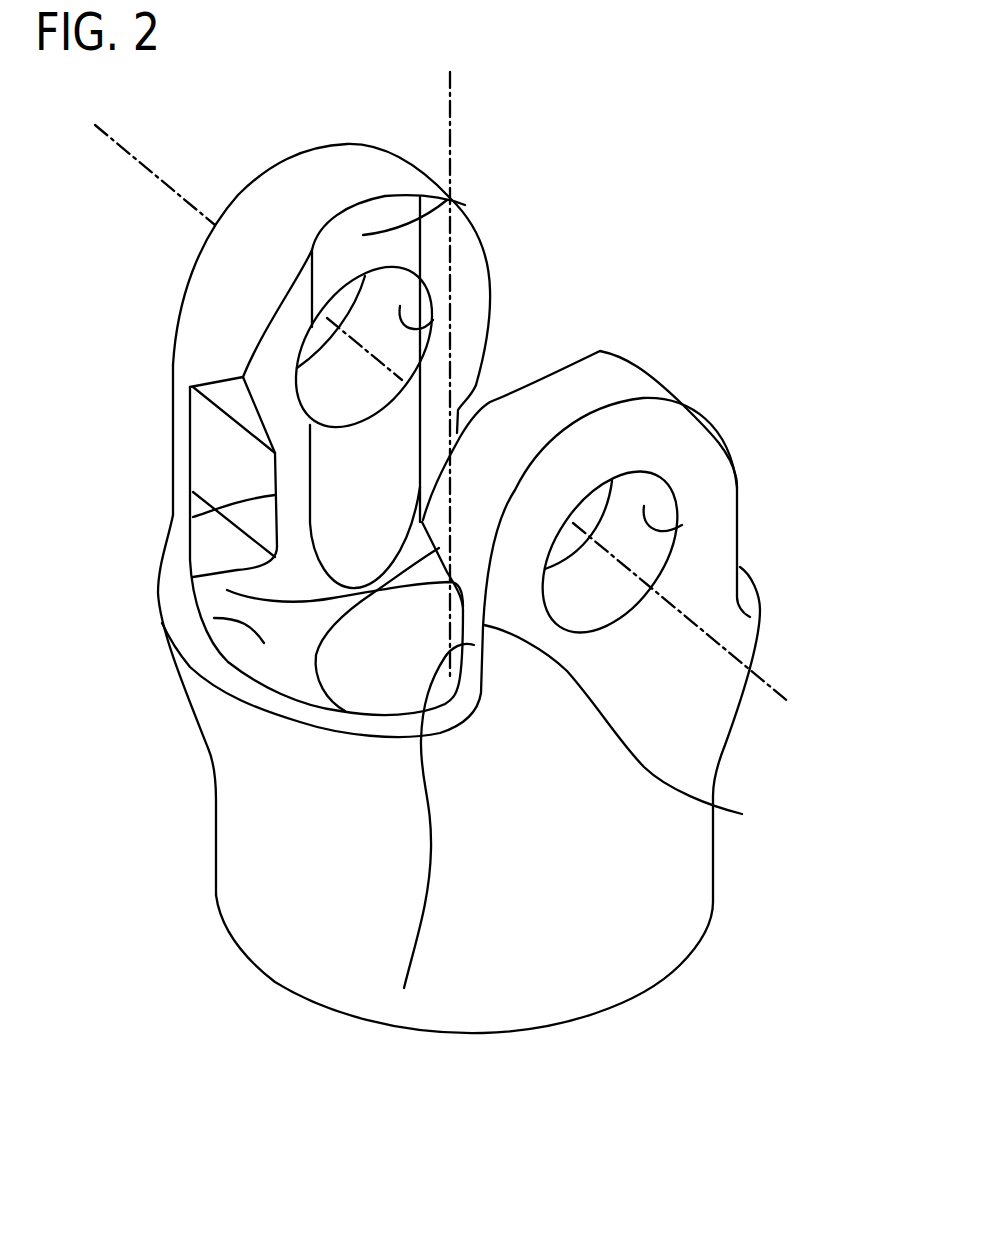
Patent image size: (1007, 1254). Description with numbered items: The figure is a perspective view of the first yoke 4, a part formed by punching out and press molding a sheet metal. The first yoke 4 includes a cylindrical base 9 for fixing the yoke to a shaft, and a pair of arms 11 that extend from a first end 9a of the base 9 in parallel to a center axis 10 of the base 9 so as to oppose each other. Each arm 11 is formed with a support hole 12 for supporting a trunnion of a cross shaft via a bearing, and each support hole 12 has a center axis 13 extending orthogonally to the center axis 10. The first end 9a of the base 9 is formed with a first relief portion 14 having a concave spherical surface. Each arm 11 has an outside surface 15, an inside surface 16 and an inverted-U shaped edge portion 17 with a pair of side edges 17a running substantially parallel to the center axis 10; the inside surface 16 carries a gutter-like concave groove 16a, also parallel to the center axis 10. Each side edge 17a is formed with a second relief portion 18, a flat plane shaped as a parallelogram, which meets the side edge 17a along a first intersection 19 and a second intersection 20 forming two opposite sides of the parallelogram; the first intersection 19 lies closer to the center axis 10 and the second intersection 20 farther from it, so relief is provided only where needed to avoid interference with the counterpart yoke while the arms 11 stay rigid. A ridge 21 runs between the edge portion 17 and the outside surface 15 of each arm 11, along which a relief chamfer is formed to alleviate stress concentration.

The first yoke 4 is at (693, 328).
The cylindrical base 9 is at (580, 970).
The first end 9a is at (242, 739).
The center axis 10 is at (450, 92).
The arms 11 is at (352, 177).
The support hole 12 is at (433, 326).
The center axis 13 is at (141, 150).
The first relief portion 14 is at (214, 618).
The outside surface 15 is at (706, 471).
The inside surface 16 is at (467, 248).
The concave groove 16a is at (447, 200).
The edge portion 17 is at (313, 178).
The side edges 17a is at (404, 988).
The second relief portion 18 is at (220, 458).
The first intersection 19 is at (193, 517).
The second intersection 20 is at (190, 410).
The ridge 21 is at (192, 266).